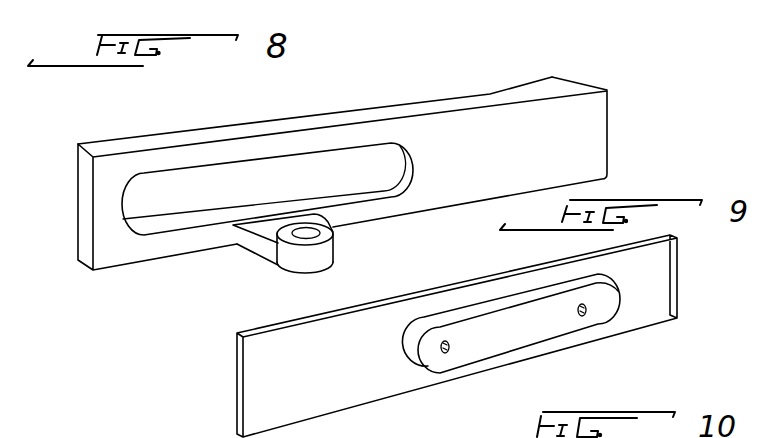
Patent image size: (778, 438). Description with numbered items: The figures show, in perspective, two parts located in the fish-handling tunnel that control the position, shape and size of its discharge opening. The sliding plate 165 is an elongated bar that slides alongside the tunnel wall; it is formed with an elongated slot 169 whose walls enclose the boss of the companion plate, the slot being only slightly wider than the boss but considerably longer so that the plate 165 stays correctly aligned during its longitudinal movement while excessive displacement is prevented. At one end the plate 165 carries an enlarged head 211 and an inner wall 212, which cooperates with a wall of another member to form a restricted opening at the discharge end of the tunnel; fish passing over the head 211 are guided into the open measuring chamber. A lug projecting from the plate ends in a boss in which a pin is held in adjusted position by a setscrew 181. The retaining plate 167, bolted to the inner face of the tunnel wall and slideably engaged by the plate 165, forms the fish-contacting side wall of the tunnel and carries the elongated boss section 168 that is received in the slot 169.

In FIG. 8, the sliding plate 165 is at (358, 166).
In FIG. 8, the elongated slot 169 is at (310, 163).
In FIG. 8, the setscrew 181 is at (325, 252).
In FIG. 8, the enlarged head 211 is at (573, 86).
In FIG. 8, the inner wall 212 is at (524, 83).
In FIG. 9, the retaining plate 167 is at (250, 376).
In FIG. 9, the elongated boss section 168 is at (548, 336).